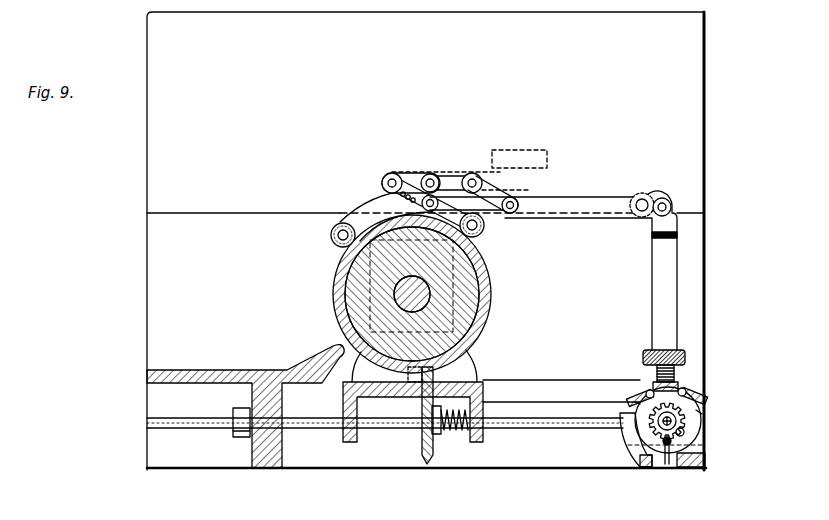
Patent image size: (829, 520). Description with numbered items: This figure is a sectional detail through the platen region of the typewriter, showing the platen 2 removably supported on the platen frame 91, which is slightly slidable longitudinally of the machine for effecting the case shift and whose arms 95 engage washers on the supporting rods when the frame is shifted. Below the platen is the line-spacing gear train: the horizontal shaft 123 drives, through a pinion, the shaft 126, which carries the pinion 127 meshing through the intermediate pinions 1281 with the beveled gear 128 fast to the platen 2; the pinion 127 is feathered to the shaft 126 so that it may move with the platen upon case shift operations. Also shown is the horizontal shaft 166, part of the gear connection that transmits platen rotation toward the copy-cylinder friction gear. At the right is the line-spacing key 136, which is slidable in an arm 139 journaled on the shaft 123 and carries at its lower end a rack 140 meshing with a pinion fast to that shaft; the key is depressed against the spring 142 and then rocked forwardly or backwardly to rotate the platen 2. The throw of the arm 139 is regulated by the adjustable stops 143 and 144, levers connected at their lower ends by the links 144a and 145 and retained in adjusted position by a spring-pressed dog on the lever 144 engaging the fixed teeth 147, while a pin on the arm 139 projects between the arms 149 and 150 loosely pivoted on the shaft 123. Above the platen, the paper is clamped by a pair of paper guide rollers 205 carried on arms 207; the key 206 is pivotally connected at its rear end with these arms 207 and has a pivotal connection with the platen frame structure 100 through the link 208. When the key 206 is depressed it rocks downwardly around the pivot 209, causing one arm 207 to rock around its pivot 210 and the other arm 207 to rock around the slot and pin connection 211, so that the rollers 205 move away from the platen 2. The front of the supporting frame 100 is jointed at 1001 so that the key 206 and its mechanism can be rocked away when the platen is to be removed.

The platen 2 is at (491, 308).
The platen frame 91 is at (334, 352).
The arms of the frame 95 is at (343, 398).
The platen frame structure 100 is at (555, 371).
The horizontal shaft 123 is at (687, 421).
The shaft 126 is at (556, 424).
The pinion 127 is at (421, 456).
The beveled gear 128 is at (491, 323).
The intermediate pinions 1281 is at (428, 373).
The key 136 is at (688, 357).
The arm 139 is at (654, 382).
The rack 140 is at (636, 418).
The spring 142 is at (690, 375).
The adjustable stop 143 is at (635, 402).
The adjustable stop 144 is at (702, 403).
The link 144a is at (646, 468).
The link 145 is at (686, 437).
The fixed teeth 147 is at (700, 412).
The arm 149 is at (688, 392).
The arm 150 is at (643, 392).
The horizontal shaft 166 is at (185, 430).
The paper guide rollers 205 is at (333, 239).
The key 206 is at (540, 150).
The arms 207 is at (452, 181).
The link 208 is at (520, 196).
The pivot 209 is at (509, 214).
The pivot 210 is at (436, 194).
The slot and pin connection 211 is at (416, 178).
The joint 1001 is at (644, 199).